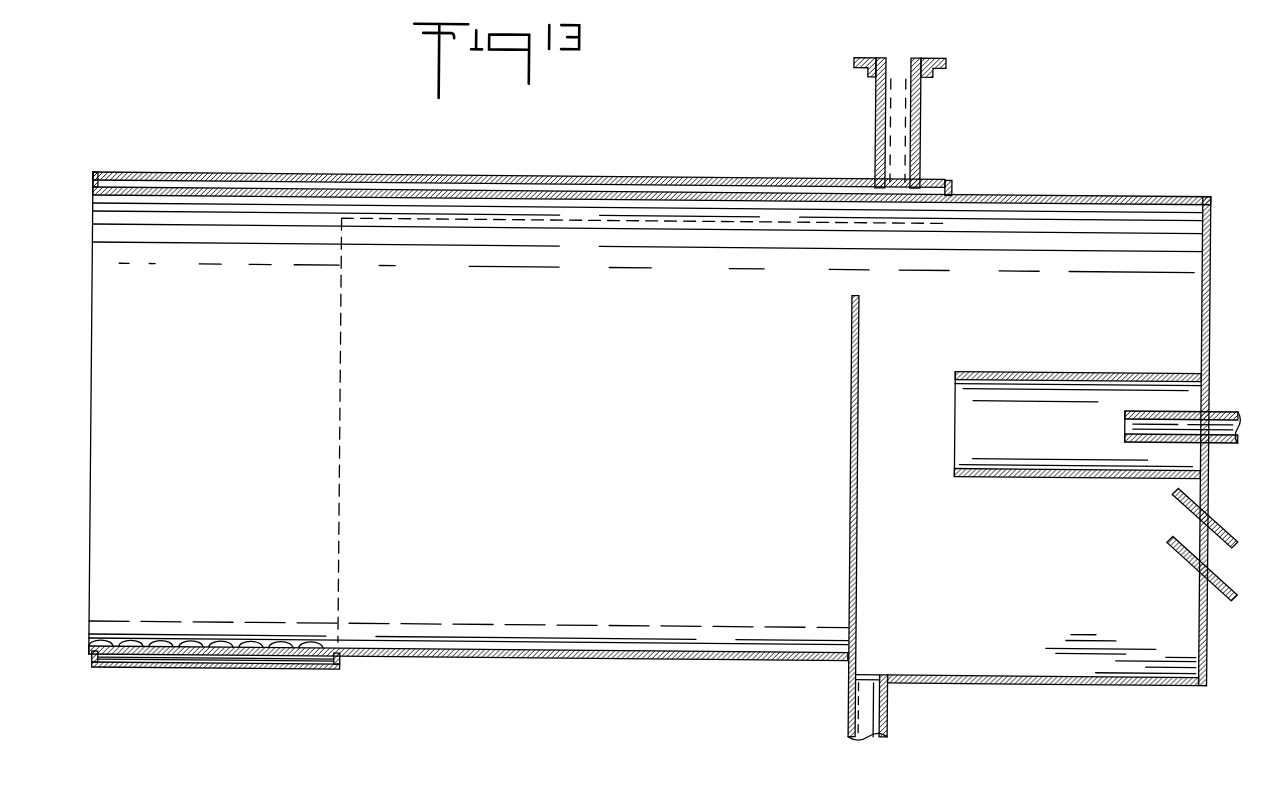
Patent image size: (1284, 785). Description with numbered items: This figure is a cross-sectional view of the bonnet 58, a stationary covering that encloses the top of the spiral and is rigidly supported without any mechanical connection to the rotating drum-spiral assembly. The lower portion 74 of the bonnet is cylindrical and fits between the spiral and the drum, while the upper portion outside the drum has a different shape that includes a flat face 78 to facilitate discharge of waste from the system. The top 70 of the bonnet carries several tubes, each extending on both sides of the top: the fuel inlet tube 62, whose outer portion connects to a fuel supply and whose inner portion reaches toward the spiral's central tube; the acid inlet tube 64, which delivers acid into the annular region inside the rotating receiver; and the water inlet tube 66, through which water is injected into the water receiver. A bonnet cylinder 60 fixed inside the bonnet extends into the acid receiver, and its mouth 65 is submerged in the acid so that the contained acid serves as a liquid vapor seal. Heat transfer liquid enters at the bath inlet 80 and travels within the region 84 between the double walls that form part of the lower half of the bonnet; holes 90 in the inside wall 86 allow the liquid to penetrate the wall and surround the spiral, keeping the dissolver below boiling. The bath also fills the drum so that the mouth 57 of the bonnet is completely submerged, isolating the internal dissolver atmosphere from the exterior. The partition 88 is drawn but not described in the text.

The mouth of the bonnet 57 is at (93, 594).
The bonnet 58 is at (1040, 677).
The bonnet cylinder 60 is at (1027, 364).
The fuel inlet tube 62 is at (1240, 402).
The acid inlet tube 64 is at (1232, 515).
The mouth of the bonnet cylinder 65 is at (957, 442).
The water inlet tube 66 is at (1233, 562).
The top of the bonnet 70 is at (1212, 264).
The lower portion of the bonnet 74 is at (620, 227).
The flat face 78 is at (1058, 187).
The bath inlet 80 is at (921, 106).
The region between the double walls 84 is at (565, 179).
The inside wall 86 is at (248, 655).
The partition 88 is at (860, 598).
The holes 90 is at (220, 643).